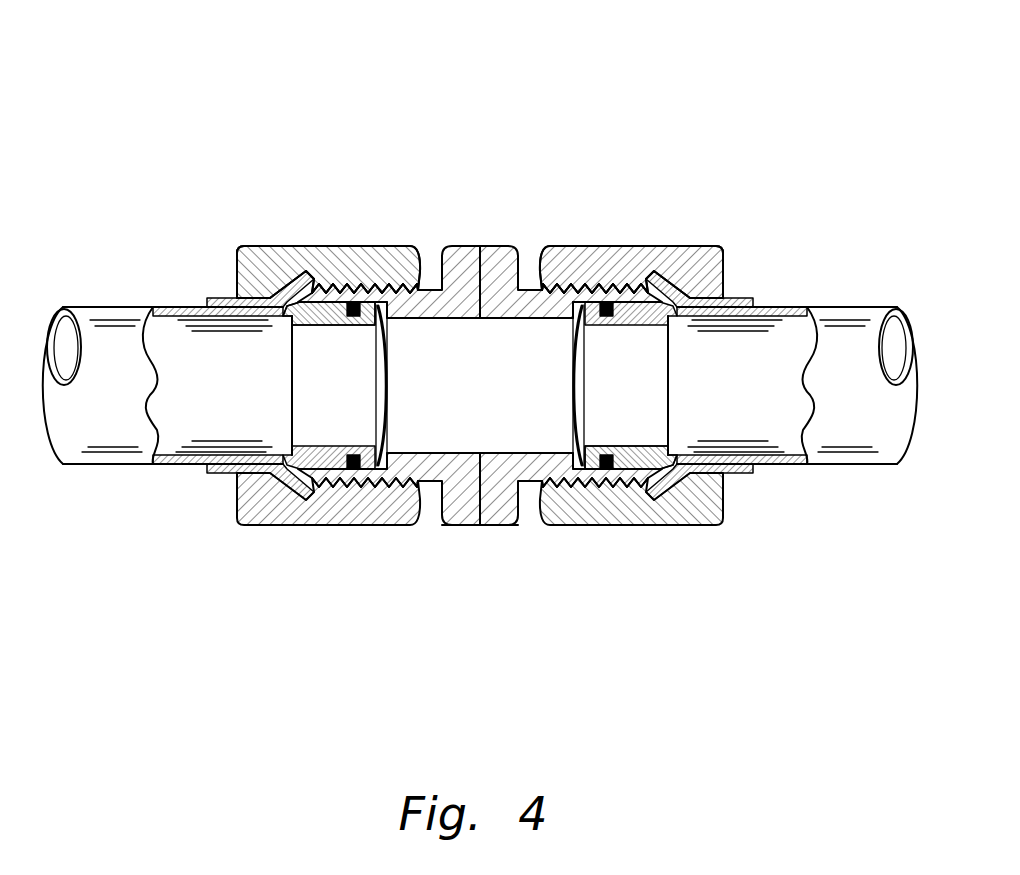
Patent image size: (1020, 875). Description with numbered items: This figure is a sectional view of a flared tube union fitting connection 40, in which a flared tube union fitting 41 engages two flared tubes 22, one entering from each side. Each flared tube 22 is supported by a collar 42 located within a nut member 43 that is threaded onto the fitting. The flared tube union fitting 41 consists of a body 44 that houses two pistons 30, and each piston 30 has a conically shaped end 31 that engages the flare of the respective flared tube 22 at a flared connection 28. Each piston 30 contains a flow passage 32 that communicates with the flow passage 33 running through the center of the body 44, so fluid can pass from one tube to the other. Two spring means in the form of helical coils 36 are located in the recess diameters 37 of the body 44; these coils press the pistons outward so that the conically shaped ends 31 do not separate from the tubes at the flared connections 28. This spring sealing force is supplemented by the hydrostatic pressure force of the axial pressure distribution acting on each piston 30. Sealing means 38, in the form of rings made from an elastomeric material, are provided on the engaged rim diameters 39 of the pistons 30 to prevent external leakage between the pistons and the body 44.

The flared tube 22 is at (128, 305).
The flared connection 28 is at (302, 472).
The piston 30 is at (336, 290).
The conically shaped end 31 is at (317, 280).
The flow passage 32 is at (323, 447).
The flow passage 33 is at (498, 452).
The helical coil 36 is at (380, 402).
The recess diameter 37 is at (363, 468).
The sealing means 38 is at (622, 300).
The engaged rim diameter 39 is at (358, 300).
The flared tube union fitting connection 40 is at (289, 95).
The flared tube union fitting 41 is at (507, 665).
The collar 42 is at (218, 473).
The nut member 43 is at (240, 265).
The body 44 is at (491, 527).